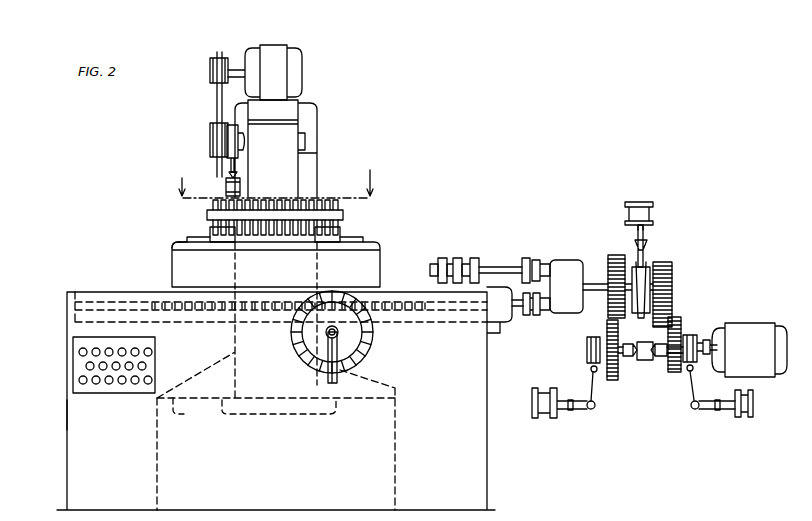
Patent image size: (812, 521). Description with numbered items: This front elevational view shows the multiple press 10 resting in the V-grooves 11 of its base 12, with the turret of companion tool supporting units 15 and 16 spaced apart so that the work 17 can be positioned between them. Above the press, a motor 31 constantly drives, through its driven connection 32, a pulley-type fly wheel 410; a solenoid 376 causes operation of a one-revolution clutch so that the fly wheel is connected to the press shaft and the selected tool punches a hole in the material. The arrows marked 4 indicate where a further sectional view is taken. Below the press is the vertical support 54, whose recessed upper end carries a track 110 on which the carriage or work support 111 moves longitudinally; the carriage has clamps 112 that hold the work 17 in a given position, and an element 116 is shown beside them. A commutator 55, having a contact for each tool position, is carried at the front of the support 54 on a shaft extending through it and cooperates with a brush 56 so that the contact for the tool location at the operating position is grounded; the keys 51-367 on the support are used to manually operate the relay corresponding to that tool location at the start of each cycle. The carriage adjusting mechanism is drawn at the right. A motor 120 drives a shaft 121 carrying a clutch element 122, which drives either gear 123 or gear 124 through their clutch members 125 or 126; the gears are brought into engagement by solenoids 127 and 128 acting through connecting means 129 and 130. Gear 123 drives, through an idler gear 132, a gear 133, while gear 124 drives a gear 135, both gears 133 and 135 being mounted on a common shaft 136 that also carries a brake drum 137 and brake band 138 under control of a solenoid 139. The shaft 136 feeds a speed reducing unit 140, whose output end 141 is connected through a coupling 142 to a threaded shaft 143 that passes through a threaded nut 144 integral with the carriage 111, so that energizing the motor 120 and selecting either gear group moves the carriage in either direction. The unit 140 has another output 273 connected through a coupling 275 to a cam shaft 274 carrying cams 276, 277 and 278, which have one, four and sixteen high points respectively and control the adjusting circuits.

The section line 4- 4 is at (274, 179).
The multiple press 10 is at (305, 112).
The V-grooves 11 is at (190, 412).
The base 12 is at (157, 472).
The tool supporting unit 15 is at (322, 199).
The tool supporting unit 16 is at (281, 237).
The work 17 is at (197, 242).
The motor 31 is at (272, 47).
The driven connection 32 is at (216, 96).
The vertical support 54 is at (67, 418).
The commutator 55 is at (368, 338).
The brush 56 is at (326, 380).
The track 110 is at (110, 292).
The carriage 111 is at (172, 269).
The clamps 112 is at (225, 241).
The slide way 116 is at (175, 245).
The motor 120 is at (755, 323).
The shaft 121 is at (700, 333).
The clutch element 122 is at (642, 362).
The gear 123 is at (676, 375).
The gear 124 is at (611, 382).
The clutch member 125 is at (660, 358).
The clutch member 126 is at (628, 358).
The solenoid 127 is at (745, 413).
The solenoid 128 is at (540, 412).
The connecting means 129 is at (697, 410).
The connecting means 130 is at (595, 366).
The idler gear 132 is at (678, 320).
The gear 133 is at (668, 265).
The gear 135 is at (610, 258).
The common shaft 136 is at (590, 291).
The brake drum 137 is at (648, 265).
The brake band 138 is at (635, 262).
The solenoid 139 is at (640, 202).
The speed reducing unit 140 is at (556, 314).
The output end 141 is at (532, 317).
The coupling 142 is at (520, 312).
The threaded shaft 143 is at (160, 312).
The threaded nut 144 is at (259, 318).
The output 273 is at (527, 258).
The cam shaft 274 is at (430, 270).
The coupling 275 is at (540, 246).
The cam 276 is at (443, 258).
The cam 277 is at (457, 258).
The cam 278 is at (474, 258).
The solenoid 376 is at (243, 184).
The pulley-type fly wheel 410 is at (212, 118).
The keys 51-367 is at (80, 380).